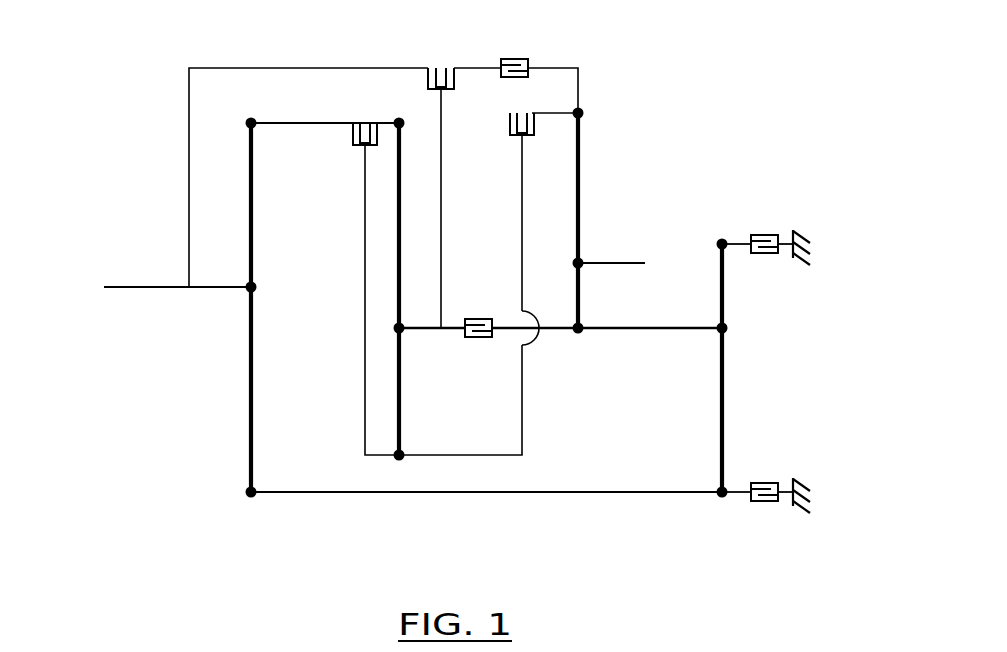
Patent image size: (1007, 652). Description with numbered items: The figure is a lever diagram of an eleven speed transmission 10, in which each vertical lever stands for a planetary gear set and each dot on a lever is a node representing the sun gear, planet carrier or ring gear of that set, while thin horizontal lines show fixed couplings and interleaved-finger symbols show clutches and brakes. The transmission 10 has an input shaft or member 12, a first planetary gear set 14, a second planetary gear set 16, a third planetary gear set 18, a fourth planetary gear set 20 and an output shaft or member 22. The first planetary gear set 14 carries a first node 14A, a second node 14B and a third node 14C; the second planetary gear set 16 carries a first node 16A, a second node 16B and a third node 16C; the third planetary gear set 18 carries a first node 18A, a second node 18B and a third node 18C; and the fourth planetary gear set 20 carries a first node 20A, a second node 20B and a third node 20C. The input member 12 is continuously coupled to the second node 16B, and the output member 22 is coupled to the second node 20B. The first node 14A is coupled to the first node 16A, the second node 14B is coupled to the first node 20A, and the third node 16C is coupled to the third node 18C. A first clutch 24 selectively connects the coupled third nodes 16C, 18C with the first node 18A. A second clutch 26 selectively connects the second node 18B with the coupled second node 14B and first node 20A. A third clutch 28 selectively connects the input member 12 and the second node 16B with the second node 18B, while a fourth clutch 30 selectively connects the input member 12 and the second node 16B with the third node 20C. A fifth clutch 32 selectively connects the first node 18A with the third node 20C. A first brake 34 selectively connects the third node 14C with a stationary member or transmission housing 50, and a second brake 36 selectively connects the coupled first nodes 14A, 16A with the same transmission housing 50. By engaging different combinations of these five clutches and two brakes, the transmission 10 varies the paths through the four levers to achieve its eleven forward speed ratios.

The eleven speed transmission 10 is at (745, 70).
The input shaft or member 12 is at (131, 292).
The first planetary gear set 14 is at (728, 524).
The first node of first planetary gear set 14A is at (719, 500).
The second node of first planetary gear set 14B is at (727, 326).
The third node of first planetary gear set 14C is at (722, 238).
The second planetary gear set 16 is at (258, 522).
The first node of second planetary gear set 16A is at (249, 500).
The second node of second planetary gear set 16B is at (256, 287).
The third node of second planetary gear set 16C is at (251, 118).
The third planetary gear set 18 is at (405, 470).
The first node of third planetary gear set 18A is at (398, 462).
The second node of third planetary gear set 18B is at (395, 329).
The third node of third planetary gear set 18C is at (398, 118).
The fourth planetary gear set 20 is at (583, 357).
The first node of fourth planetary gear set 20A is at (576, 338).
The second node of fourth planetary gear set 20B is at (574, 263).
The third node of fourth planetary gear set 20C is at (583, 112).
The output shaft or member 22 is at (632, 268).
The first clutch 24 is at (356, 133).
The second clutch 26 is at (478, 317).
The third clutch 28 is at (454, 78).
The fourth clutch 30 is at (510, 58).
The fifth clutch 32 is at (534, 127).
The first brake 34 is at (767, 234).
The second brake 36 is at (764, 504).
The stationary member or transmission housing 50 is at (798, 229).